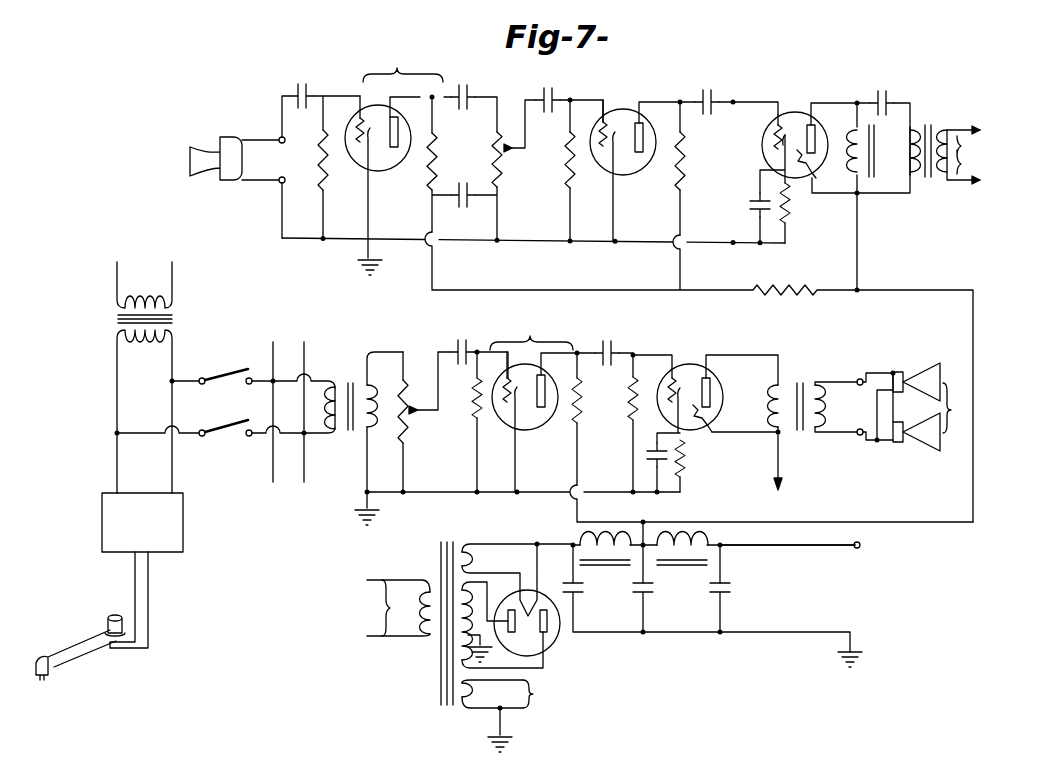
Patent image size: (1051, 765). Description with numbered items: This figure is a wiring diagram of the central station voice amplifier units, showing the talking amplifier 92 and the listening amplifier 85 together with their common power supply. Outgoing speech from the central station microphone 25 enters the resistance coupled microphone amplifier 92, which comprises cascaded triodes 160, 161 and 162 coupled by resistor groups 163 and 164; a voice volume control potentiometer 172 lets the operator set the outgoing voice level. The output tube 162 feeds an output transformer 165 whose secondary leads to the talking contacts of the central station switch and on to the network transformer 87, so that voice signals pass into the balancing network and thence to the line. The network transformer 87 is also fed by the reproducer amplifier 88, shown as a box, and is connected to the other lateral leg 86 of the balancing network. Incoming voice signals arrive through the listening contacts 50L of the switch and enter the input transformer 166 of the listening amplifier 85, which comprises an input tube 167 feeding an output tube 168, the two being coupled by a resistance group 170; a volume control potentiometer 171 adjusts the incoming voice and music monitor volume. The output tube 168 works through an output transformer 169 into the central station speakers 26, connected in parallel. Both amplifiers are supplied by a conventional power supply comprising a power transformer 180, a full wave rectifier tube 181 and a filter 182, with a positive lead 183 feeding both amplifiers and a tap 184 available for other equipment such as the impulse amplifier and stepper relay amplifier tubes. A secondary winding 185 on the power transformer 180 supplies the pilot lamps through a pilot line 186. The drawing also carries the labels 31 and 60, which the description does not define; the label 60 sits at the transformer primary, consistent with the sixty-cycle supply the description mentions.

The central station microphone 25 is at (210, 145).
The central station microphone amplifier 92 is at (403, 66).
The triode 160 is at (370, 106).
The voice volume control potentiometer 172 is at (498, 140).
The resistor group 163 is at (433, 163).
The triode 161 is at (615, 115).
The resistor group 164 is at (682, 168).
The output tube 162 is at (794, 116).
The output transformer 165 is at (930, 127).
The lateral leg 86 is at (158, 256).
The network transformer 87 is at (118, 320).
The listening contacts 50L is at (212, 436).
The reproducer amplifier 88 is at (107, 530).
The pickup arm 31 is at (65, 636).
The input transformer 166 is at (350, 380).
The volume control potentiometer 171 is at (410, 425).
The central station speaker amplifier 85 is at (531, 332).
The input tube 167 is at (507, 422).
The resistance group 170 is at (585, 415).
The output tube 168 is at (680, 366).
The output transformer 169 is at (798, 384).
The central station speakers 26 is at (916, 407).
The positive lead 183 is at (675, 523).
The power supply line 60 is at (392, 608).
The full wave rectifier tube 181 is at (556, 643).
The power transformer 180 is at (440, 672).
The filter 182 is at (718, 604).
The tap 184 is at (775, 632).
The secondary winding 185 is at (462, 700).
The pilot line 186 is at (546, 694).